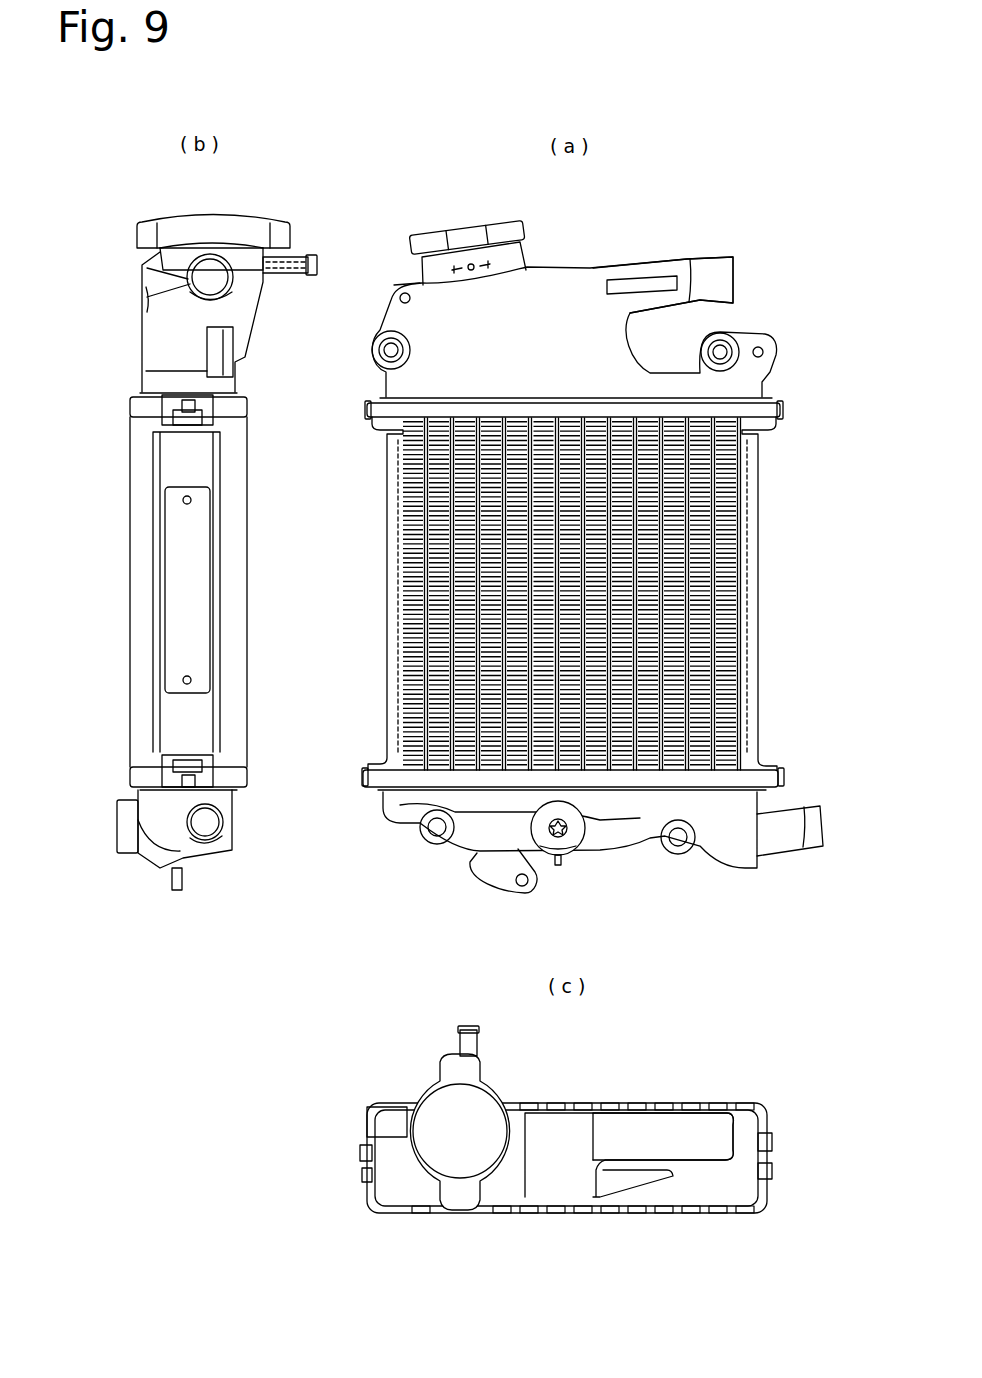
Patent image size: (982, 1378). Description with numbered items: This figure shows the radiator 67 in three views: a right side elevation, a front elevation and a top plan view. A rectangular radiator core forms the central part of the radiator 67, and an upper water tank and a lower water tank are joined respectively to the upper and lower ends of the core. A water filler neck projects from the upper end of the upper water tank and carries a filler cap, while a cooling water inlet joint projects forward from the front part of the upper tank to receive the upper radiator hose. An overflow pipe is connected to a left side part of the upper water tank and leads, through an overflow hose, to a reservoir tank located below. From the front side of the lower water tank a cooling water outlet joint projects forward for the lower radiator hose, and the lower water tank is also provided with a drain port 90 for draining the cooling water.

The radiator 67 is at (750, 204).
The drain port 90 is at (580, 847).